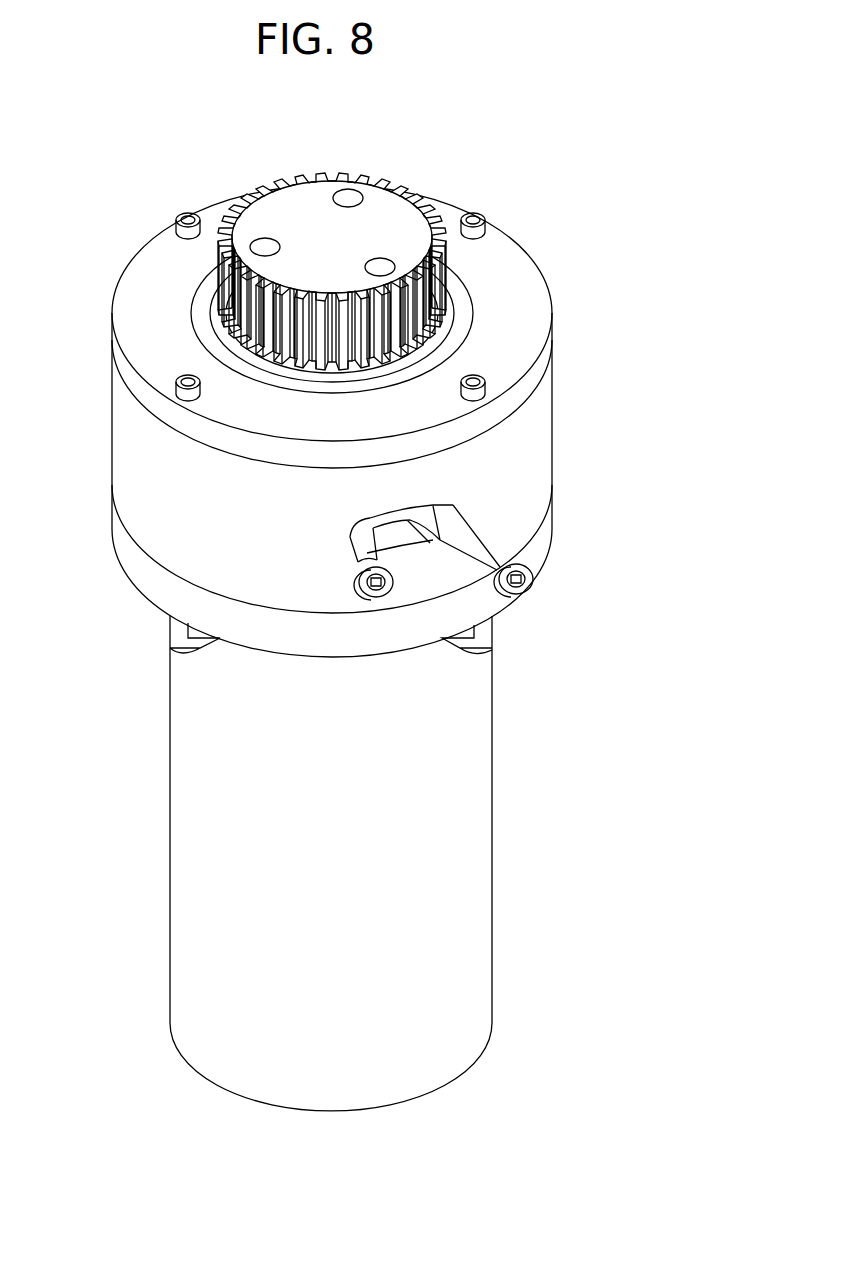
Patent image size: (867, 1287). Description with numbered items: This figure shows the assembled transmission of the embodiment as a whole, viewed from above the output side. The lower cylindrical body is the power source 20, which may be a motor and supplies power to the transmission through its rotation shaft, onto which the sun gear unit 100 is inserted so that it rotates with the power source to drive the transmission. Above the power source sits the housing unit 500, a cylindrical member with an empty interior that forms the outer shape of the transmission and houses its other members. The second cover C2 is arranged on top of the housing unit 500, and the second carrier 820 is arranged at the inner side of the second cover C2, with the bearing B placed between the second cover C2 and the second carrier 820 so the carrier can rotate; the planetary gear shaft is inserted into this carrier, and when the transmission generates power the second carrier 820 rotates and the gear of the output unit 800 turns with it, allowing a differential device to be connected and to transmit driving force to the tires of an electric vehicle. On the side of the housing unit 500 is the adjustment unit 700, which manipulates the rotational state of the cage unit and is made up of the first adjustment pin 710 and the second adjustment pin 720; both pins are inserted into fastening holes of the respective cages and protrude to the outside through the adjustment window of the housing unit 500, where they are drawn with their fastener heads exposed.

The sun gear unit 100 is at (138, 143).
The power source 20 is at (473, 761).
The housing unit 500 is at (540, 425).
The adjustment unit 700 is at (513, 581).
The first adjustment pin 710 is at (383, 592).
The second adjustment pin 720 is at (530, 590).
The output unit 800 is at (393, 215).
The second carrier 820 is at (455, 342).
The bearing B is at (425, 346).
The second cover C2 is at (533, 323).